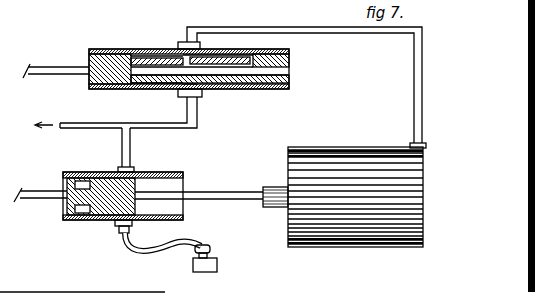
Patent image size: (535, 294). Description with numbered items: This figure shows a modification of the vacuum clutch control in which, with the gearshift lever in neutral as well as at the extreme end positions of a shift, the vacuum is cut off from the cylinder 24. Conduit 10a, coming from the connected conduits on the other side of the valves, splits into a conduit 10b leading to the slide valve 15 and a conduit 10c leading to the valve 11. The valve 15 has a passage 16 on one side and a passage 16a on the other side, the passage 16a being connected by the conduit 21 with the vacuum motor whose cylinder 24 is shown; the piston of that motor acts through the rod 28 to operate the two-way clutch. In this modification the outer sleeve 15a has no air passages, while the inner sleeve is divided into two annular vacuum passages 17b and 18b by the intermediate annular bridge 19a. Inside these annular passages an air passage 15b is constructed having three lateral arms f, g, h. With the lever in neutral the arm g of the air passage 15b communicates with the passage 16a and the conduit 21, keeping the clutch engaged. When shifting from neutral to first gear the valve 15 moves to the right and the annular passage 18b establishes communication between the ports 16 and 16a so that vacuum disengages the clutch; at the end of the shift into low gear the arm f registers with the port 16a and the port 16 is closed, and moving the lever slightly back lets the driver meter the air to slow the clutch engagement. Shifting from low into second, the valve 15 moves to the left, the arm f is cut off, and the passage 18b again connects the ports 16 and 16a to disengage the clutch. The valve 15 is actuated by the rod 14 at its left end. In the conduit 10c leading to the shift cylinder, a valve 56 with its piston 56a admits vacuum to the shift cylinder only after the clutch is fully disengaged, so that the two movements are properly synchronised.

The input rod 14 is at (35, 64).
The lateral arm f is at (136, 50).
The lateral arm g is at (172, 50).
The lateral arm h is at (257, 57).
The valve 15 is at (290, 85).
The outer sleeve 15a is at (290, 54).
The air passage 15b is at (290, 71).
The passage 16 is at (198, 96).
The passage 16a is at (195, 54).
The annular vacuum passage 17b is at (243, 90).
The annular vacuum passage 18b is at (160, 86).
The intermediate annular bridge 19a is at (182, 100).
The conduit 10a is at (72, 121).
The conduit 10b is at (187, 129).
The conduit 10c is at (131, 156).
The valve 11 is at (217, 264).
The conduit 21 is at (414, 117).
The cylinder 24 is at (408, 246).
The rod 28 is at (33, 192).
The valve 56 is at (184, 177).
The valve 56a is at (81, 219).